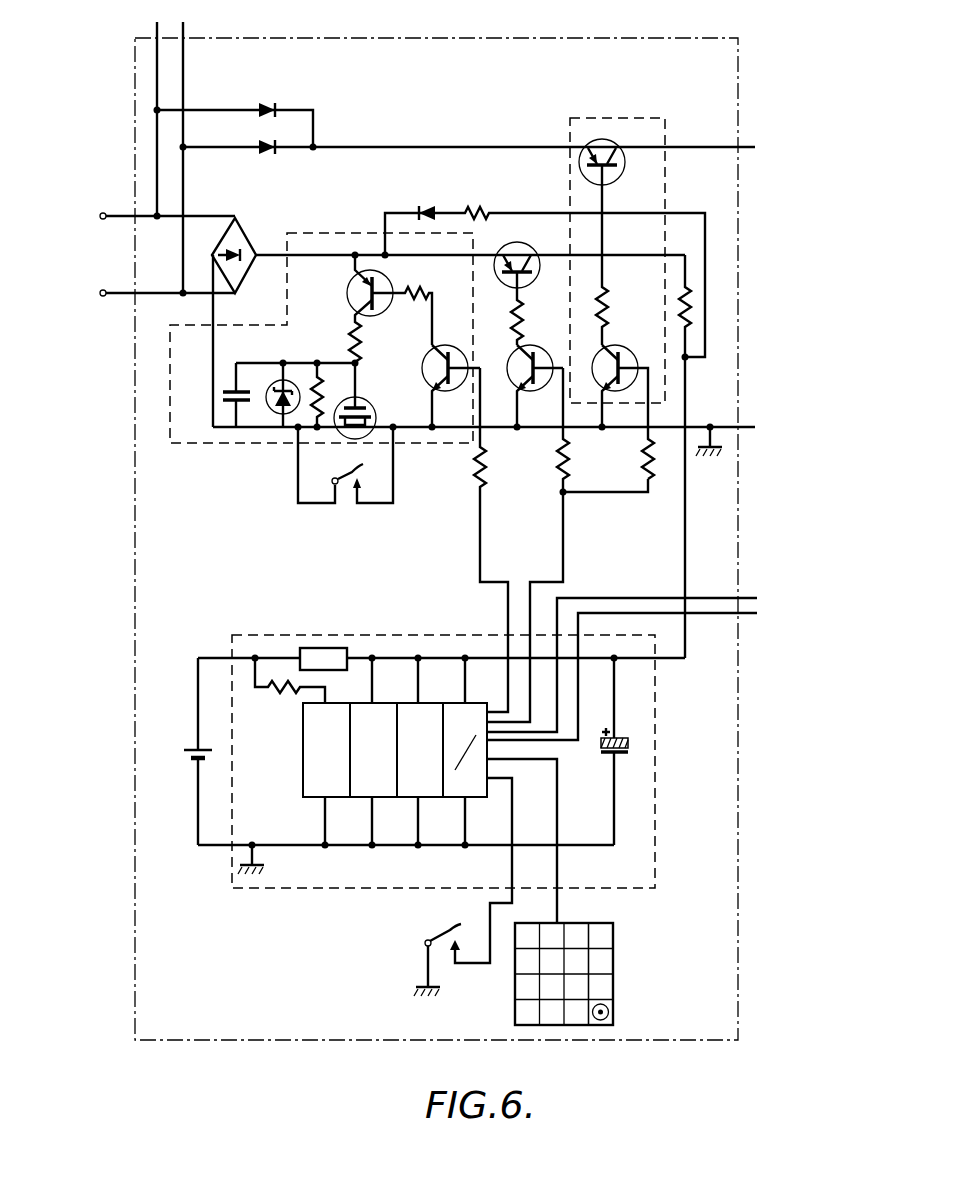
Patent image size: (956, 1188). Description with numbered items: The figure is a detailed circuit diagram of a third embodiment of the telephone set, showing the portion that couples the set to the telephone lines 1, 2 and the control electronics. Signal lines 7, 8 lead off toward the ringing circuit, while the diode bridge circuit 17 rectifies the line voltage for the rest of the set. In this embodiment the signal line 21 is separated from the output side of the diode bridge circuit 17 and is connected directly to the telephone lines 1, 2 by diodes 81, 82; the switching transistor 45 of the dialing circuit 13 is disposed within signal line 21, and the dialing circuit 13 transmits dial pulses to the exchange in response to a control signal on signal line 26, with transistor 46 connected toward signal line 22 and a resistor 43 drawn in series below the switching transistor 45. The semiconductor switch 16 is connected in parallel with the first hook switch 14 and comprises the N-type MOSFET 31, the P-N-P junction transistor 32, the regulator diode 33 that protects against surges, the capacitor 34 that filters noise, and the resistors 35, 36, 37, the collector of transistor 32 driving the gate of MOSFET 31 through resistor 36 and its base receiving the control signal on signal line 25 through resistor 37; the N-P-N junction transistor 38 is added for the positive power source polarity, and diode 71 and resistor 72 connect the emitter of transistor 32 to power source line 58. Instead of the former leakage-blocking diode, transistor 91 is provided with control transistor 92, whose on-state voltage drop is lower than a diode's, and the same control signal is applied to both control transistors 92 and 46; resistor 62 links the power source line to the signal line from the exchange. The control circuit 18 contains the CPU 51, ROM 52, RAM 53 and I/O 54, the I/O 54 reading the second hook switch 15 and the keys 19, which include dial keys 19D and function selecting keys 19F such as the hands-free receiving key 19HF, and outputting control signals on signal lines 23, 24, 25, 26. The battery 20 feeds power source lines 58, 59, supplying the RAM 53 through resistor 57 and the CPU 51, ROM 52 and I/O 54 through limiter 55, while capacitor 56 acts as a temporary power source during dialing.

The telephone line 1 is at (104, 212).
The telephone line 2 is at (104, 289).
The signal line 7 is at (156, 28).
The signal line 8 is at (185, 28).
The dialing circuit 13 is at (626, 116).
The first hook switch 14 is at (350, 504).
The second hook switch 15 is at (445, 932).
The semiconductor switch 16 is at (337, 232).
The diode bridge circuit 17 is at (238, 226).
The control circuit 18 is at (322, 888).
The keys 19 is at (500, 1012).
The dial keys 19D is at (556, 1028).
The function selecting keys 19F is at (616, 988).
The hands-free receiving key 19HF is at (601, 1028).
The battery 20 is at (190, 758).
The signal line 21 is at (744, 145).
The signal line 22 is at (744, 425).
The signal line 23 is at (635, 659).
The signal line 24 is at (635, 671).
The signal line 25 is at (484, 541).
The signal line 26 is at (568, 541).
The N-type MOSFET 31 is at (366, 398).
The P-N-P type junction transistor 32 is at (352, 282).
The regulator diode 33 is at (283, 380).
The capacitor 34 is at (236, 378).
The resistor 35 is at (317, 362).
The resistor 36 is at (362, 340).
The resistor 37 is at (430, 292).
The N-P-N junction transistor 38 is at (447, 346).
The resistor 43 is at (606, 292).
The switching transistor 45 is at (613, 148).
The transistor 46 is at (615, 346).
The CPU 51 is at (365, 798).
The ROM 52 is at (410, 798).
The RAM 53 is at (316, 798).
The I/O 54 is at (460, 798).
The limiter 55 is at (332, 647).
The capacitor 56 is at (602, 748).
The resistor 57 is at (290, 695).
The power source line 58 is at (430, 657).
The power source line 59 is at (592, 846).
The resistor 62 is at (691, 312).
The diode 71 is at (428, 206).
The resistor 72 is at (476, 206).
The diode 81 is at (270, 103).
The diode 82 is at (270, 154).
The transistor 91 is at (530, 252).
The control transistor 92 is at (532, 346).